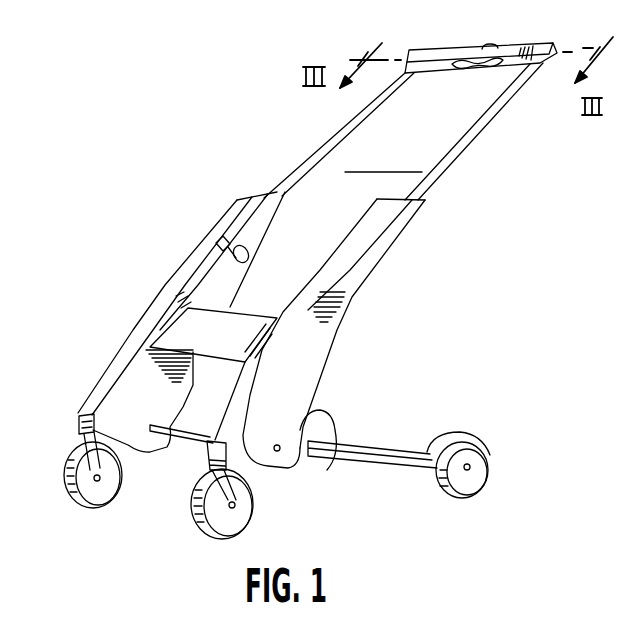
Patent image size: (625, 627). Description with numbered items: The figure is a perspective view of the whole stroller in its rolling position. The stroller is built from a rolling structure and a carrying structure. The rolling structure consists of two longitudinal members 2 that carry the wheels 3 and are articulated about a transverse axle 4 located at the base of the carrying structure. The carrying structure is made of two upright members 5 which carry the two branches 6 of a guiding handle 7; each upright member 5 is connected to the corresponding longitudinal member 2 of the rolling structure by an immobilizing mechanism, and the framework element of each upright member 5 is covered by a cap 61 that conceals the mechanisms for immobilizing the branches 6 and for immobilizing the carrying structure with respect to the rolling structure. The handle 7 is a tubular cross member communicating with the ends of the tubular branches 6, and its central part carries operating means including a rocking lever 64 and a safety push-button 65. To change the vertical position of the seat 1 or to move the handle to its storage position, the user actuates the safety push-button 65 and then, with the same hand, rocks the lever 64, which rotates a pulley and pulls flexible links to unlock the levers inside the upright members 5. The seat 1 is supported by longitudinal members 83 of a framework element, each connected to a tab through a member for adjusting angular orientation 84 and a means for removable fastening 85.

The seat 1 is at (314, 238).
The longitudinal member 2 is at (367, 452).
The wheel 3 is at (490, 473).
The transverse axle 4 is at (208, 425).
The upright member 5 is at (327, 372).
The branch 6 is at (466, 143).
The guiding handle 7 is at (530, 43).
The cap 61 is at (367, 217).
The rocking lever 64 is at (463, 70).
The safety push-button 65 is at (490, 43).
The longitudinal member of the framework element 83 is at (253, 230).
The member for adjusting angular orientation 84 is at (223, 263).
The means for removable fastening 85 is at (223, 257).